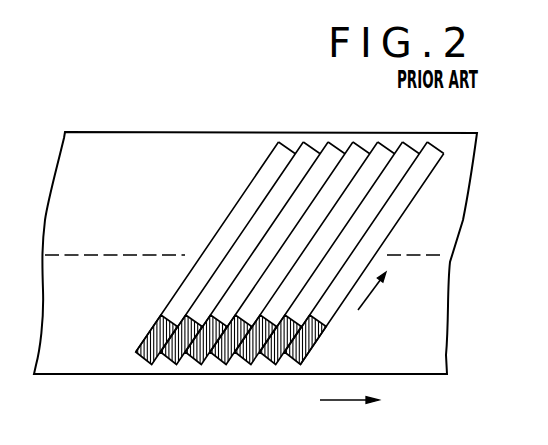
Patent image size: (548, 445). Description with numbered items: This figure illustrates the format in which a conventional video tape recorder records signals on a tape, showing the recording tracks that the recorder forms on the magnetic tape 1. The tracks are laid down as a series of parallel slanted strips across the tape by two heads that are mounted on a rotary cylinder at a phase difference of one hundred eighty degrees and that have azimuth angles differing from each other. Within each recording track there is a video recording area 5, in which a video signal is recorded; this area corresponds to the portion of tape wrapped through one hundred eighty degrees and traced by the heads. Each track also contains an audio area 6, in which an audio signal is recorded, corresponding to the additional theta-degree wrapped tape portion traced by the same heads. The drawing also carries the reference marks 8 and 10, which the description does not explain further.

The magnetic tape 1 is at (212, 132).
The video recording area 5 is at (238, 220).
The audio area 6 is at (148, 344).
The propagation direction arrow 8 is at (372, 297).
The movement direction arrow 10 is at (343, 400).